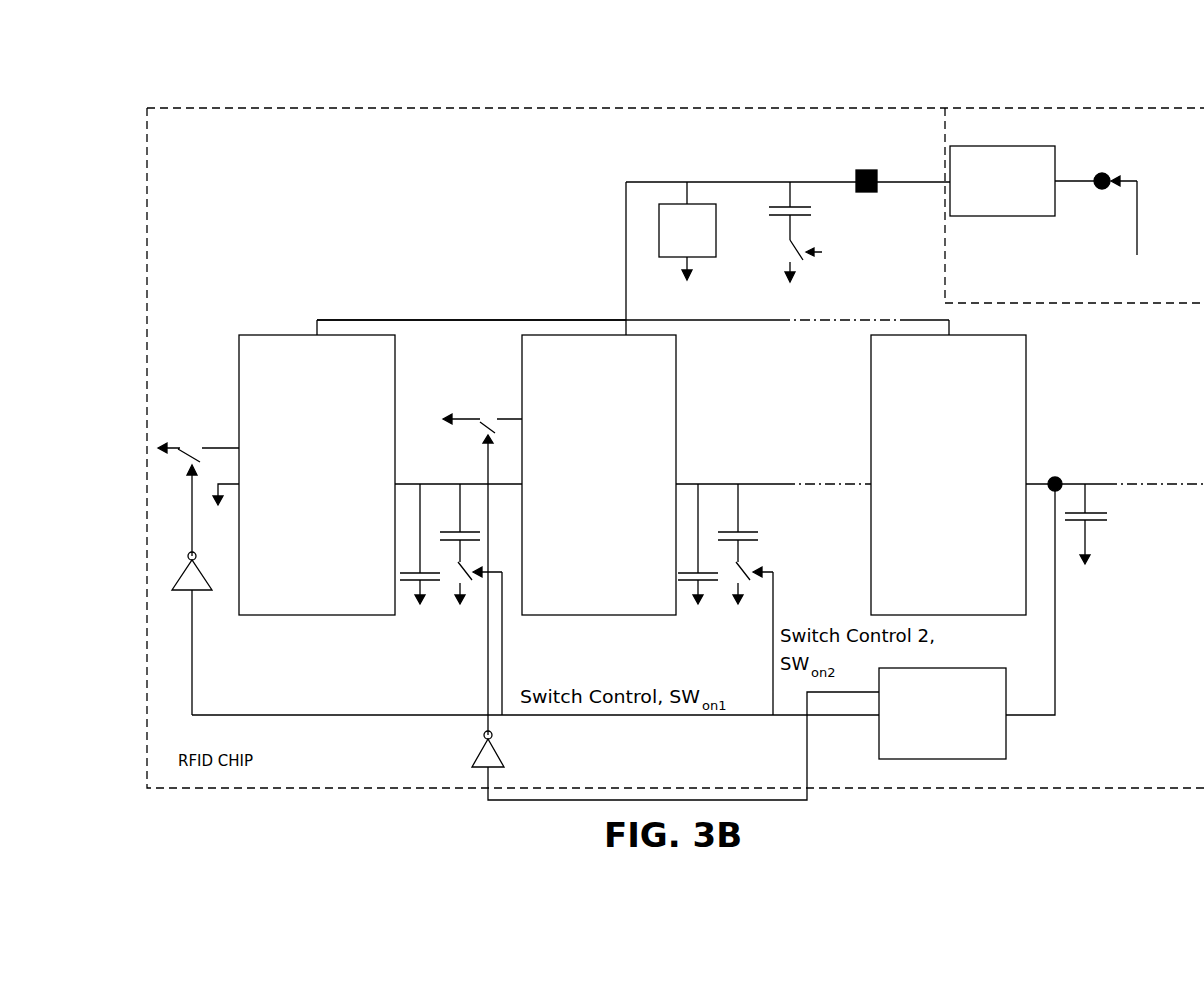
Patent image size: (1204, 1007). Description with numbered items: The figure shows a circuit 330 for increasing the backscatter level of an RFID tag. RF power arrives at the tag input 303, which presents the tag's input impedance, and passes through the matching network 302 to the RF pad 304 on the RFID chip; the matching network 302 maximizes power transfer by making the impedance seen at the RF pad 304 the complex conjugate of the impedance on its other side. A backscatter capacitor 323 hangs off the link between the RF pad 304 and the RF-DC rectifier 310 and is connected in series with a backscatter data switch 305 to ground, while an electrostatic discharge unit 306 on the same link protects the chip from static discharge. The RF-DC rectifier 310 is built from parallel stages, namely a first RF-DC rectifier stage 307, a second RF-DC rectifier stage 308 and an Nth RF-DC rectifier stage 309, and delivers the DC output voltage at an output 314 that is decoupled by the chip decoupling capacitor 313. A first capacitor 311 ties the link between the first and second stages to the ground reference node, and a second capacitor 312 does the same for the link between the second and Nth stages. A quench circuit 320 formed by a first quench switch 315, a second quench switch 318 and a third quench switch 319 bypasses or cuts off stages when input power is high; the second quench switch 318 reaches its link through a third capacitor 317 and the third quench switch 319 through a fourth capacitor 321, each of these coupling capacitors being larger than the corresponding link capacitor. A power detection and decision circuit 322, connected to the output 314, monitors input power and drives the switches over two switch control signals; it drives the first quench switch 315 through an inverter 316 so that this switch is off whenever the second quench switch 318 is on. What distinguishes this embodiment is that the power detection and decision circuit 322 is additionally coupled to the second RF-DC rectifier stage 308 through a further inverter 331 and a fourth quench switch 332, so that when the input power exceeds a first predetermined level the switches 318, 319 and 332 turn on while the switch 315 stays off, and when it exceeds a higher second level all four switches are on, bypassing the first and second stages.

The matching network N1 302 is at (996, 145).
The tag input 303 is at (1123, 148).
The RF pad 304 is at (883, 172).
The backscatter data switch SW_BS 305 is at (800, 268).
The electrostatic discharge unit 306 is at (698, 262).
The first RF-DC rectifier stage 307 is at (281, 618).
The second RF-DC rectifier stage 308 is at (562, 618).
The Nth RF-DC rectifier stage 309 is at (1005, 618).
The RF-DC rectifier 310 is at (428, 318).
The capacitor C1 311 is at (434, 600).
The capacitor C2 312 is at (712, 600).
The chip decoupling capacitor Cchip 313 is at (1097, 497).
The output 314 is at (1055, 478).
The switch SW_Q0 315 is at (175, 458).
The inverter 316 is at (180, 572).
The capacitor C3 317 is at (450, 525).
The switch SW_Q1 318 is at (472, 600).
The switch SW_Q2 319 is at (752, 600).
The quench circuit 320 is at (180, 520).
The capacitor C4 321 is at (728, 525).
The power detection and decision circuit 322 is at (1006, 735).
The backscatter capacitor C_BS 323 is at (800, 200).
The circuit 330 is at (1203, 81).
The inverter 331 is at (500, 750).
The switch SW_Q3 332 is at (490, 412).